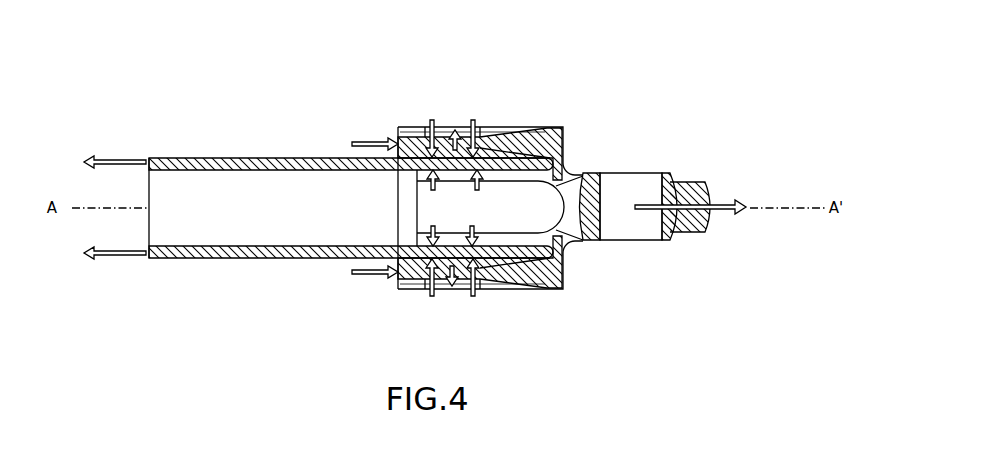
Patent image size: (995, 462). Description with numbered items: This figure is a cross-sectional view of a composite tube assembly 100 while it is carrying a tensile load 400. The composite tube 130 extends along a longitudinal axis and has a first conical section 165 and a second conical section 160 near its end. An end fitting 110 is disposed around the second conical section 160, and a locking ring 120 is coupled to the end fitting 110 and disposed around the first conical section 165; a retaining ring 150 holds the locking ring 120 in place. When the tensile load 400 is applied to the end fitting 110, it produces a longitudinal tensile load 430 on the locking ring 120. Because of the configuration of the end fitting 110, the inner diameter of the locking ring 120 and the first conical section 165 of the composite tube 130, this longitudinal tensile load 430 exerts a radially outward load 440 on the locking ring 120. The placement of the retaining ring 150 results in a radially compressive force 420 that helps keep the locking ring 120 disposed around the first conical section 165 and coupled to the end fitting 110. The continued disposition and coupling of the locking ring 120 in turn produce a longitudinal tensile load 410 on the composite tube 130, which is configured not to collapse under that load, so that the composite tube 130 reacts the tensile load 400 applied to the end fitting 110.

The composite tube assembly 100 is at (572, 56).
The end fitting 110 is at (700, 190).
The locking ring 120 is at (400, 136).
The composite tube 130 is at (220, 158).
The retaining ring 150 is at (487, 133).
The second conical section 160 is at (545, 150).
The first conical section 165 is at (441, 135).
The tensile load 400 is at (690, 214).
The longitudinal tensile load 410 is at (118, 159).
The radially compressive force 420 is at (430, 122).
The longitudinal tensile load 430 is at (365, 136).
The radially outward load 440 is at (455, 128).